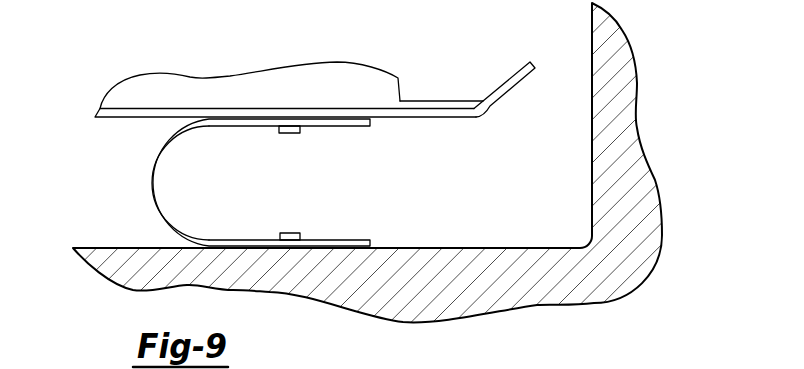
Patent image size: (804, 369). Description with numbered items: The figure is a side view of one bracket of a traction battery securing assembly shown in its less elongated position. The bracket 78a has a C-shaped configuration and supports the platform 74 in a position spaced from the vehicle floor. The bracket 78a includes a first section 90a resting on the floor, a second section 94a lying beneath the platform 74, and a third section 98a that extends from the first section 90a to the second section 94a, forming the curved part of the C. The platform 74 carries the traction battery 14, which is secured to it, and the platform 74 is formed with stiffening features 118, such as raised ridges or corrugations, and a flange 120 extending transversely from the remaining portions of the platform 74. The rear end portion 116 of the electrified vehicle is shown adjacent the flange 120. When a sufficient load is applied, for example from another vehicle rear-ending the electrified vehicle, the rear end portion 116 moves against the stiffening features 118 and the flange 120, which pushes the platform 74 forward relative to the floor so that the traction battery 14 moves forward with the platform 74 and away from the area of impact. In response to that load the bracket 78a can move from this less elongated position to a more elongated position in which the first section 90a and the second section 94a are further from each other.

The traction battery 14 is at (338, 88).
The platform 74 is at (458, 135).
The bracket 78a is at (145, 163).
The first section 90a is at (352, 238).
The second section 94a is at (318, 128).
The third section 98a is at (163, 215).
The rear end portion 116 is at (592, 163).
The stiffening features 118 is at (422, 103).
The flange 120 is at (518, 80).